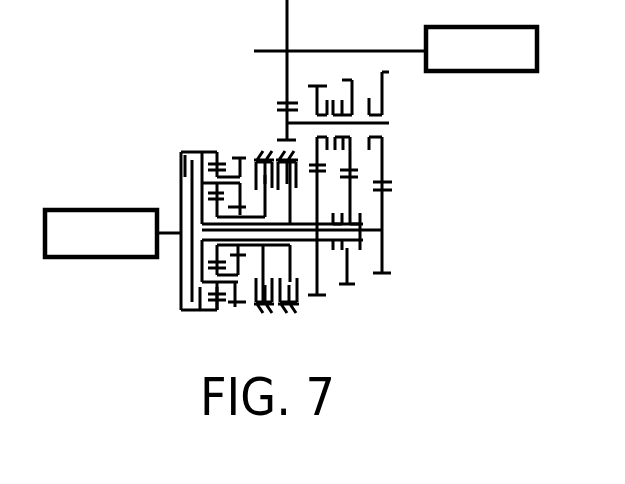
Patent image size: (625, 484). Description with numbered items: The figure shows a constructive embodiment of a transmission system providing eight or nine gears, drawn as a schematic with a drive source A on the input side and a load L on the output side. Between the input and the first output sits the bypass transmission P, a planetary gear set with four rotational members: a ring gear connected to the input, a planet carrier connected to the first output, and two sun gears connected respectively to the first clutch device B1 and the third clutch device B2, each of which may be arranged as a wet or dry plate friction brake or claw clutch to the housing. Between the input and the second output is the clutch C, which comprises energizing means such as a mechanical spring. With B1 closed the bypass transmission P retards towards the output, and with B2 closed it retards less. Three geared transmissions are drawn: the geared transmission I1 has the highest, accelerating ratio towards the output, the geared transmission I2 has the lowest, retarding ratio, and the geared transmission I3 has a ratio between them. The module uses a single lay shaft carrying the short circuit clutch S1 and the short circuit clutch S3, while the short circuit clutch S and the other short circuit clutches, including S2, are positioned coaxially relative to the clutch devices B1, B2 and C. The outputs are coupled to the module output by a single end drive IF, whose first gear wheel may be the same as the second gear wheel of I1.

The drive source A is at (113, 233).
The load / output L is at (481, 49).
The end drive IF is at (334, 70).
The short circuit clutch S1 is at (327, 83).
The short circuit clutch S3 is at (335, 83).
The second gear stage S2 is at (370, 83).
The first clutch device B1 is at (277, 152).
The third clutch device B2 is at (252, 153).
The clutch C is at (192, 308).
The bypass transmission P is at (234, 307).
The geared transmission I1 is at (328, 225).
The geared transmission I3 is at (346, 231).
The geared transmission I2 is at (380, 231).
The short circuit clutch S is at (357, 299).